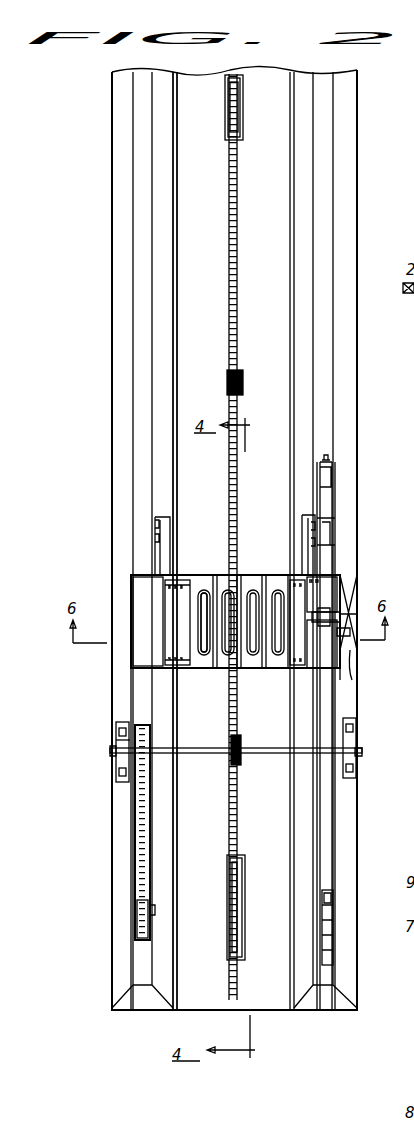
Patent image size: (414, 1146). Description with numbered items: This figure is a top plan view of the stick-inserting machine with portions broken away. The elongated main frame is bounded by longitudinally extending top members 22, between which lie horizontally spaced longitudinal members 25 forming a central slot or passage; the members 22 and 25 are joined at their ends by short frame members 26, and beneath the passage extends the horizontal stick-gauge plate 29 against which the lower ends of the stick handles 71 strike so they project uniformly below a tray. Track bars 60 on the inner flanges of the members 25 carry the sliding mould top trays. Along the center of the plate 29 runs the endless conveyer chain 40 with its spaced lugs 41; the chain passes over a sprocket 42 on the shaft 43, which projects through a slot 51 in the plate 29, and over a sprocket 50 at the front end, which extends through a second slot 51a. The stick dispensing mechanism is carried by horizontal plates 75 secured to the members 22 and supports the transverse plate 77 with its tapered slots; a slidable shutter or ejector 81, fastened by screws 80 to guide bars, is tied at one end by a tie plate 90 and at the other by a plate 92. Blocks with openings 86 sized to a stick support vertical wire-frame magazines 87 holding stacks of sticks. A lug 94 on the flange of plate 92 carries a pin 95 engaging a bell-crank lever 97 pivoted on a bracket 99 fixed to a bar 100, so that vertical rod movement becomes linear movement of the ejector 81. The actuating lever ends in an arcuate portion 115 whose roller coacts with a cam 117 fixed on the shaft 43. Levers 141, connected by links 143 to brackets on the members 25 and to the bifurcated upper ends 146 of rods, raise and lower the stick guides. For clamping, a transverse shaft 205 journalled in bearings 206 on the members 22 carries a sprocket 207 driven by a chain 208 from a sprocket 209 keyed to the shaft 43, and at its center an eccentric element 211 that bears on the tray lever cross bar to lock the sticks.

The top member 22 is at (112, 213).
The longitudinally extending member 25 is at (172, 215).
The short frame member 26 is at (147, 993).
The stick-gauge plate 29 is at (272, 993).
The endless conveyer chain 40 is at (238, 320).
The lug 41 is at (243, 385).
The sprocket 42 is at (245, 880).
The shaft 43 is at (152, 908).
The sprocket 50 is at (243, 120).
The slot 51 is at (228, 878).
The second slot 51a is at (226, 112).
The track bar 60 is at (177, 250).
The stick handle 71 is at (200, 618).
The horizontal plate 75 is at (357, 660).
The transversely extending horizontal plate 77 is at (165, 668).
The screw 80 is at (167, 680).
The slidable shutter 81 is at (175, 585).
The opening 86 is at (215, 575).
The wire frame 87 is at (204, 590).
The tie plate 90 is at (150, 648).
The plate 92 is at (292, 655).
The lug 94 is at (322, 594).
The pin 95 is at (322, 644).
The bell-crank lever 97 is at (342, 590).
The bracket 99 is at (347, 600).
The bar 100 is at (350, 650).
The arcuate portion 115 is at (335, 822).
The cam 117 is at (325, 928).
The lever 141 is at (160, 555).
The link 143 is at (158, 520).
The bifurcated upper end 146 is at (158, 538).
The shaft 205 is at (275, 752).
The bearing 206 is at (122, 760).
The sprocket 207 is at (118, 742).
The chain 208 is at (135, 820).
The sprocket 209 is at (135, 915).
The eccentric element 211 is at (232, 748).